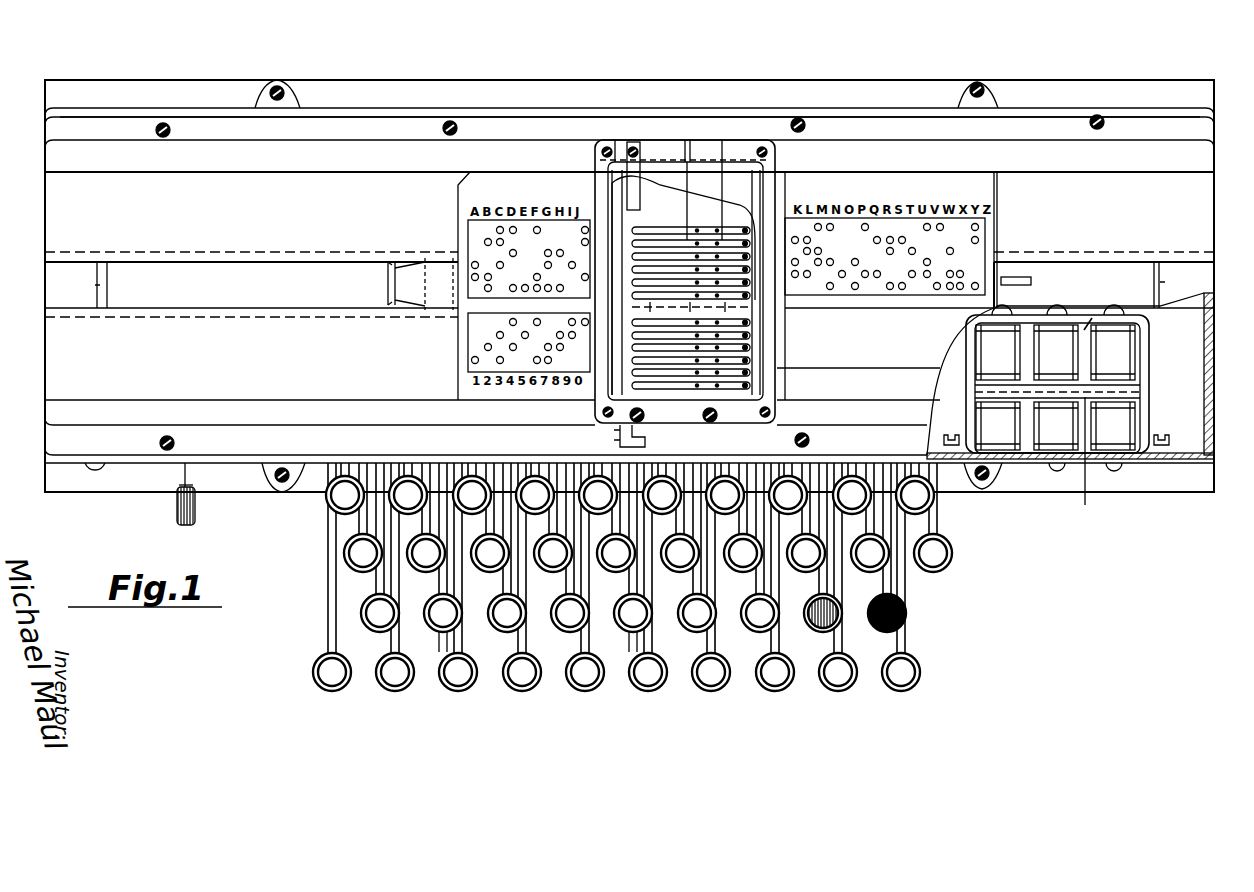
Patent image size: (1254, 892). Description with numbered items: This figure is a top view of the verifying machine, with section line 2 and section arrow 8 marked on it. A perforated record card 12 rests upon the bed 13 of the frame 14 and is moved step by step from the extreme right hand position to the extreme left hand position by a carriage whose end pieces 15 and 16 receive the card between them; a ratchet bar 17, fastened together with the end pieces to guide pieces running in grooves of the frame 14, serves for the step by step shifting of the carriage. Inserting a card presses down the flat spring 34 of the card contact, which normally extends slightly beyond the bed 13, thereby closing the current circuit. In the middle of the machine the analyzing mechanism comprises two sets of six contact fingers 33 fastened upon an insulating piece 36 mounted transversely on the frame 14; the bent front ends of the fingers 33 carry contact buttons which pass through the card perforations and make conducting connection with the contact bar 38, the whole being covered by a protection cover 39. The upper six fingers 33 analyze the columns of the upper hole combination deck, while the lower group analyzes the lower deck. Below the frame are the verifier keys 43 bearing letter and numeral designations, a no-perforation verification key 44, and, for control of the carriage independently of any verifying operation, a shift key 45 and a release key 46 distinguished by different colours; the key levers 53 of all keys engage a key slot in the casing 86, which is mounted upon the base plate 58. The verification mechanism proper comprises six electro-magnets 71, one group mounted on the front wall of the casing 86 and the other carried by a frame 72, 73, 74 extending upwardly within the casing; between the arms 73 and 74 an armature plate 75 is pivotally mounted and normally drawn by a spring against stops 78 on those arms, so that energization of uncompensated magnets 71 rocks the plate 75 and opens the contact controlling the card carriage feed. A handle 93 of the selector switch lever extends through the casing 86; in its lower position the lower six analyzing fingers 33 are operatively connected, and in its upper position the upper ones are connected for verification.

The section line 2 is at (90, 288).
The section line arrow 8 is at (1056, 335).
The perforated record card 12 is at (945, 183).
The bed 13 is at (1128, 185).
The frame 14 is at (1120, 123).
The end piece 15 is at (443, 273).
The end piece 16 is at (1003, 262).
The ratchet bar 17 is at (1031, 281).
The analyzing fingers 33 is at (722, 293).
The flat spring 34 is at (620, 180).
The insulating piece 36 is at (706, 146).
The contact bar 38 is at (662, 388).
The protection cover 39 is at (757, 177).
The verifier keys 43 is at (384, 660).
The no-perforation verification key 44 is at (940, 553).
The shift key 45 is at (838, 622).
The release key 46 is at (904, 614).
The key levers 53 is at (455, 634).
The base plate 58 is at (137, 87).
The electro-magnets 71 is at (1047, 388).
The frame 72 is at (1087, 325).
The frame arm 73 is at (969, 378).
The frame arm 74 is at (1150, 345).
The armature plate 75 is at (1085, 505).
The stops 78 is at (969, 390).
The casing 86 is at (1212, 420).
The handle 93 is at (177, 510).